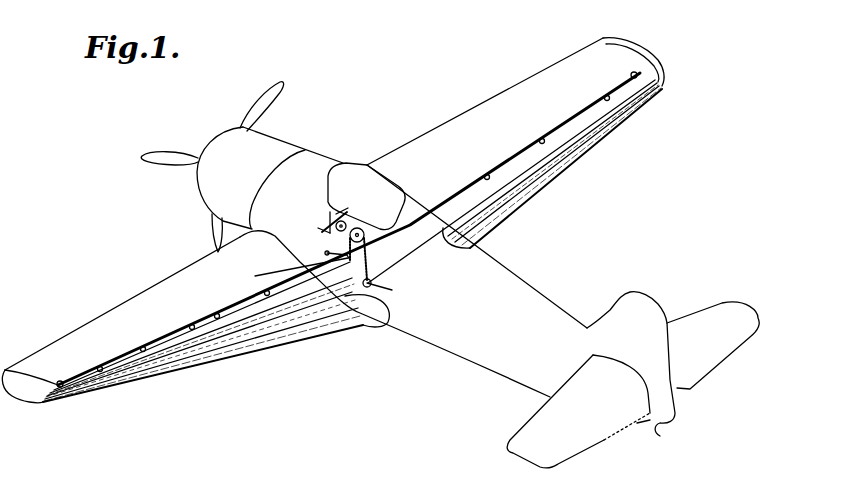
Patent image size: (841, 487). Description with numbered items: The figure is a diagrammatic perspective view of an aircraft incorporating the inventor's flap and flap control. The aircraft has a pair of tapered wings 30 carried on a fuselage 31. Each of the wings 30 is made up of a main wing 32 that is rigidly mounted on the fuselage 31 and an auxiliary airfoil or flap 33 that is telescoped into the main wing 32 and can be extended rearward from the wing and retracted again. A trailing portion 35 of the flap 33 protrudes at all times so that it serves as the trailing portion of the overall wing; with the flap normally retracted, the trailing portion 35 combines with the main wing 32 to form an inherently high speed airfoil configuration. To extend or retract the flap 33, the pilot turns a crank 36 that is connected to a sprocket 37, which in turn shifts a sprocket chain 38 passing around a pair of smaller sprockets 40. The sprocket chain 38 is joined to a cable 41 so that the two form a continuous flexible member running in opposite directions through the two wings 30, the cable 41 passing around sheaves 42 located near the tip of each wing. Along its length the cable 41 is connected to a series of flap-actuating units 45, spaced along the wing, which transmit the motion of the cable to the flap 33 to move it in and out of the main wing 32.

The tapered wings 30 is at (193, 262).
The fuselage 31 is at (323, 154).
The main wing 32 is at (112, 311).
The auxiliary airfoil or flap 33 is at (50, 406).
The trailing portion 35 is at (200, 364).
The crank 36 is at (322, 226).
The sprocket 37 is at (383, 225).
The sprocket chain 38 is at (370, 260).
The smaller sprockets 40 is at (325, 254).
The cable 41 is at (280, 296).
The sheaves 42 is at (59, 381).
The flap-actuating units 45 is at (167, 329).